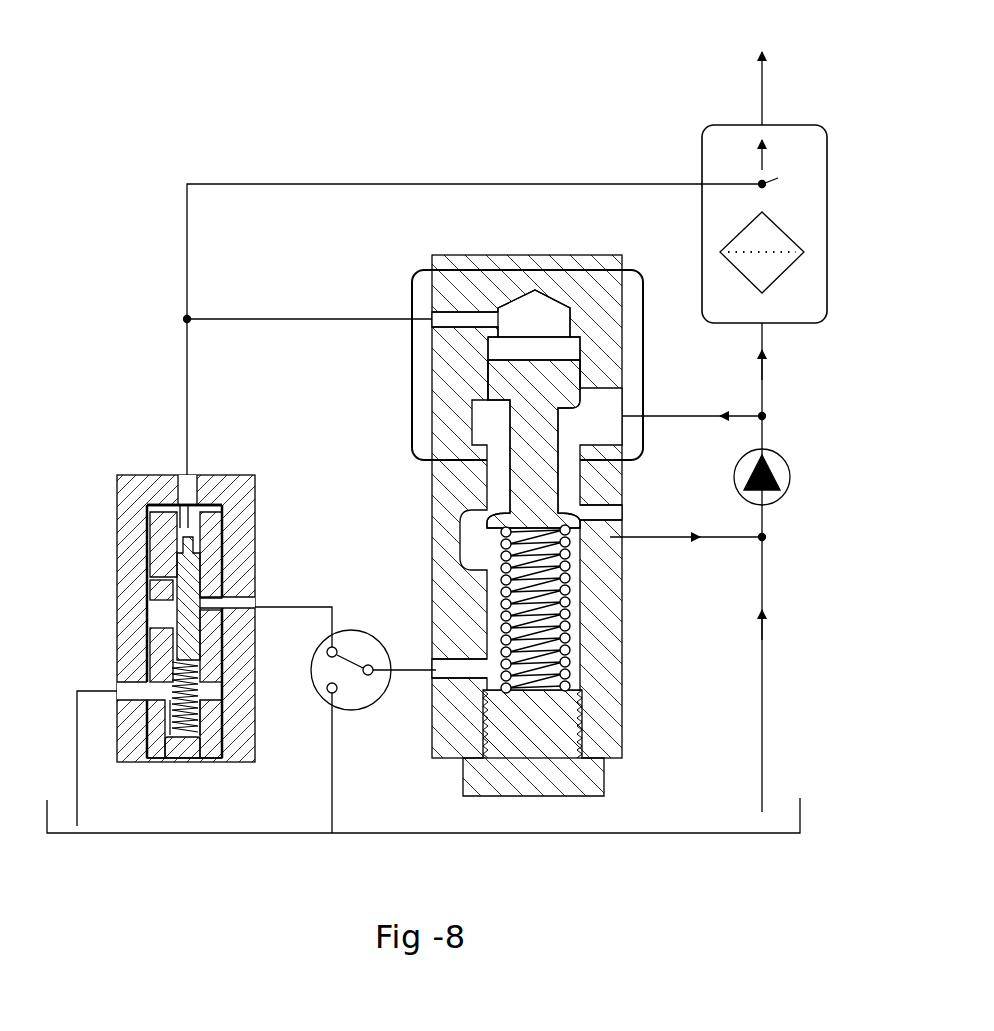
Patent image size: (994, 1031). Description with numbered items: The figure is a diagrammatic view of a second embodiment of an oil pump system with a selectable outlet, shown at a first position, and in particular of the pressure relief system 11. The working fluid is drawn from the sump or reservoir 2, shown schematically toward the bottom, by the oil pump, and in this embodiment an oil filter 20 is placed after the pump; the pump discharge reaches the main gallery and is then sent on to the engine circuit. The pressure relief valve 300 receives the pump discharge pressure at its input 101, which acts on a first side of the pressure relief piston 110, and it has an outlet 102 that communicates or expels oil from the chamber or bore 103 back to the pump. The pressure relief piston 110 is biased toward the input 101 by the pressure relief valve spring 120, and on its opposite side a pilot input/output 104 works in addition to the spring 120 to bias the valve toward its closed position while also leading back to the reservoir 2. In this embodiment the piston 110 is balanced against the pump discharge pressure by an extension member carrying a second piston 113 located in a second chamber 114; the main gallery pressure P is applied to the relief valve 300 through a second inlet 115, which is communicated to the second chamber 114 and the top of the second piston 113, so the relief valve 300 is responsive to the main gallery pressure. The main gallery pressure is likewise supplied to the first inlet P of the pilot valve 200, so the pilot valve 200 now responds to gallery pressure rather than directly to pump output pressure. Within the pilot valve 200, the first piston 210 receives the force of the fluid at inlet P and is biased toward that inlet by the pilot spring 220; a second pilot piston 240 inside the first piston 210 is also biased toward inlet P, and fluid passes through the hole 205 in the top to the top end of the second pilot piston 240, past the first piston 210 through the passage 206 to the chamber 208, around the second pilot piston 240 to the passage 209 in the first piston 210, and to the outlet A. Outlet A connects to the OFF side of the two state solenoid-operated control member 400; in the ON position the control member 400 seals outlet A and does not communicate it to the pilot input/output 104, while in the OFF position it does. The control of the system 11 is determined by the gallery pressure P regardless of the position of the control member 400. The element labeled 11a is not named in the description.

The reservoir 2 is at (632, 833).
The pressure relief system 11 is at (355, 465).
The piston 11a is at (520, 405).
The oil filter 20 is at (735, 237).
The input 101 is at (632, 413).
The outlet 102 is at (642, 540).
The chamber or bore 103 is at (575, 450).
The pilot input/output 104 is at (420, 668).
The pressure relief piston 110 is at (600, 525).
The second piston 113 is at (500, 380).
The second chamber 114 is at (510, 350).
The second inlet 115 is at (425, 320).
The pressure relief valve spring 120 is at (565, 630).
The pilot valve 200 is at (117, 485).
The hole 205 is at (207, 512).
The passage 206 is at (165, 577).
The chamber 208 is at (160, 612).
The passage 209 is at (205, 600).
The first piston 210 is at (212, 520).
The pilot spring 220 is at (197, 718).
The second pilot piston 240 is at (183, 547).
The pressure relief valve 300 is at (535, 255).
The control member 400 is at (370, 710).